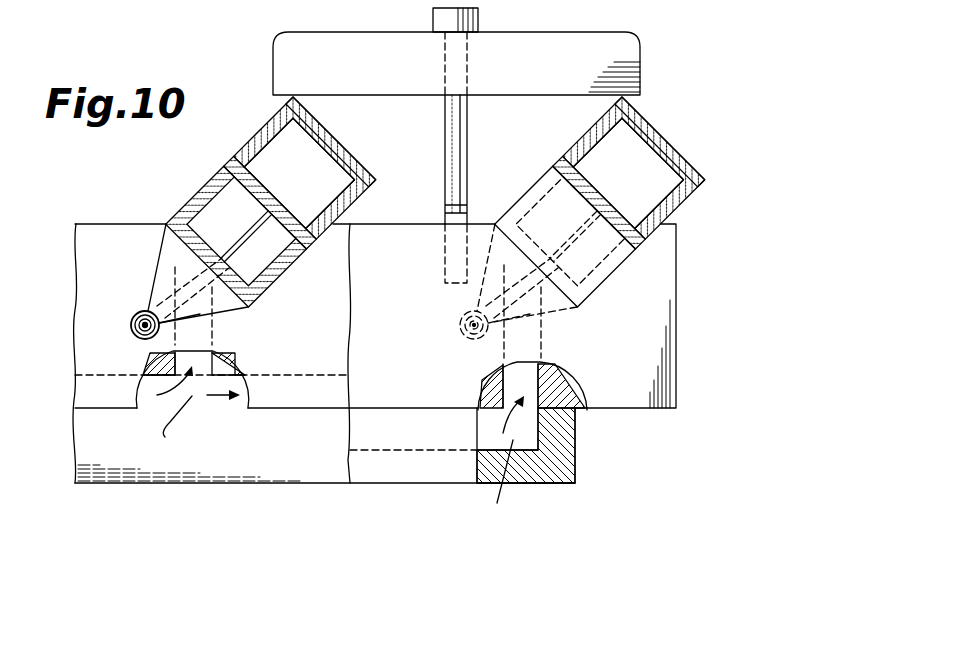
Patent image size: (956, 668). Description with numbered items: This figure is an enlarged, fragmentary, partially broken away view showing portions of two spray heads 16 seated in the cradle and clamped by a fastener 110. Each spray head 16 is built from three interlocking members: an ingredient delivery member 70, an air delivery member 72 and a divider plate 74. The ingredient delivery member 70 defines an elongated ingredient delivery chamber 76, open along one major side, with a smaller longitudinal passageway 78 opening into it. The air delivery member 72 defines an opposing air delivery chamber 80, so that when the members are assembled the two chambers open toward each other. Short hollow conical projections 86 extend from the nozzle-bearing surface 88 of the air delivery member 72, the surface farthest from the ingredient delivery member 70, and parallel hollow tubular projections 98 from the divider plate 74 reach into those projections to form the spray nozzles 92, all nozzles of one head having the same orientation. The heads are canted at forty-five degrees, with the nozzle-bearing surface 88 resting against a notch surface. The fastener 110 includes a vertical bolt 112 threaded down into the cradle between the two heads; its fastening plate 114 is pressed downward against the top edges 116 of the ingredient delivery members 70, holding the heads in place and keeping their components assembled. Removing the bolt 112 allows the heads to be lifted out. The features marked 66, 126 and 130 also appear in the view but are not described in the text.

The fastener 110 is at (456, 141).
The fastening plate 114 is at (617, 68).
The vertical bolt 112 is at (462, 143).
The top edges 116 is at (280, 110).
The spray head 16 is at (423, 215).
The ingredient delivery member 70 is at (371, 190).
The ingredient delivery chamber 76 is at (331, 160).
The divider plate 74 is at (232, 168).
The air delivery chamber 80 is at (283, 253).
The air delivery member 72 is at (283, 275).
The nozzle-bearing surface 88 is at (226, 300).
The conical projections 86 is at (157, 275).
The tubular projections 98 is at (133, 302).
The spray nozzles 92 is at (140, 335).
The body 66 is at (664, 302).
The longitudinal passageway 78 is at (425, 377).
The air inlet port 126 is at (240, 400).
The ingredient port 130 is at (478, 434).